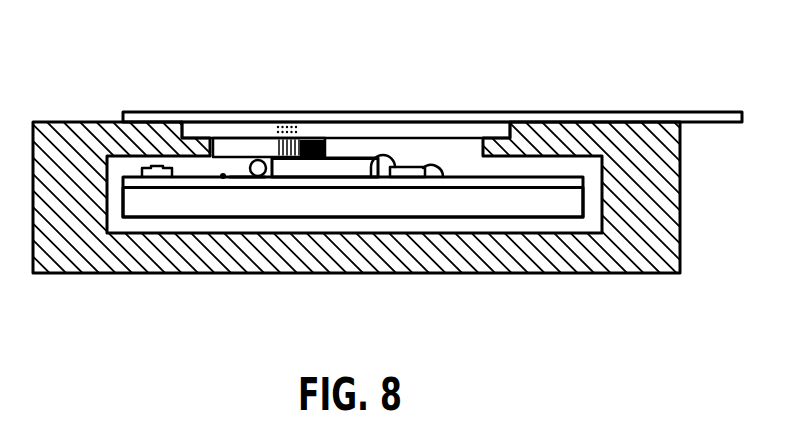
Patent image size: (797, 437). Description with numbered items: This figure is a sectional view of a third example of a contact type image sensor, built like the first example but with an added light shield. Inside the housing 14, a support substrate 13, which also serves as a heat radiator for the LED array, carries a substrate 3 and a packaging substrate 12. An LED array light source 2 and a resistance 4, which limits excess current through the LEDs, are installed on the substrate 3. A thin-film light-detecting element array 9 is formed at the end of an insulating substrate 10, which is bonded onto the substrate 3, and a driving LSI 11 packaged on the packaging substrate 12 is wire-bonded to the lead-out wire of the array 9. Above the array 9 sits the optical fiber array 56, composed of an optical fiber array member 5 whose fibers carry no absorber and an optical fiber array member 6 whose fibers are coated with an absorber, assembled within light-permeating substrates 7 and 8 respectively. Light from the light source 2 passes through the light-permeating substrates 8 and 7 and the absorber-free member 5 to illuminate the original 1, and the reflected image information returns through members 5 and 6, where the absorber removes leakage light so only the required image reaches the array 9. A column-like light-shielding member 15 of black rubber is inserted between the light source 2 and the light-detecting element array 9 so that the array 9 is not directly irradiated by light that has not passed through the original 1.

The original 1 is at (605, 122).
The light source 2 is at (223, 177).
The substrate 3 is at (247, 184).
The resistance 4 is at (155, 168).
The optical fiber array member 5 is at (285, 128).
The optical fiber array member 6 is at (299, 143).
The optical fiber array 56 is at (303, 62).
The light-permeating substrate 7 is at (255, 128).
The light-permeating substrate 8 is at (228, 143).
The thin-film light-detecting element array 9 is at (292, 161).
The insulating substrate 10 is at (360, 168).
The driving LSI 11 is at (410, 167).
The packaging substrate 12 is at (513, 183).
The support substrate 13 is at (442, 203).
The housing 14 is at (68, 195).
The light-shielding member 15 is at (262, 178).